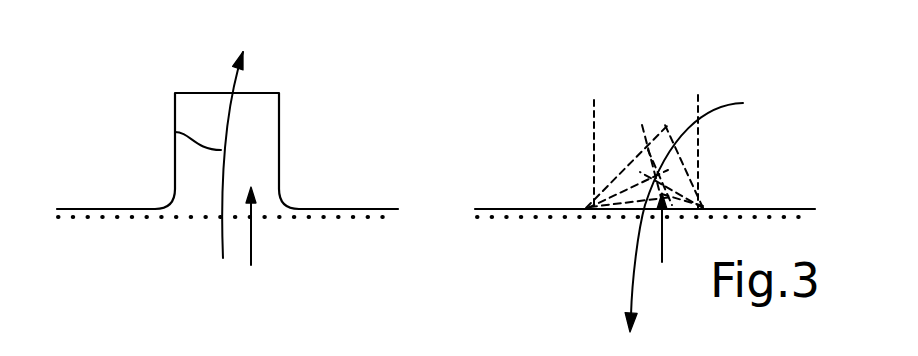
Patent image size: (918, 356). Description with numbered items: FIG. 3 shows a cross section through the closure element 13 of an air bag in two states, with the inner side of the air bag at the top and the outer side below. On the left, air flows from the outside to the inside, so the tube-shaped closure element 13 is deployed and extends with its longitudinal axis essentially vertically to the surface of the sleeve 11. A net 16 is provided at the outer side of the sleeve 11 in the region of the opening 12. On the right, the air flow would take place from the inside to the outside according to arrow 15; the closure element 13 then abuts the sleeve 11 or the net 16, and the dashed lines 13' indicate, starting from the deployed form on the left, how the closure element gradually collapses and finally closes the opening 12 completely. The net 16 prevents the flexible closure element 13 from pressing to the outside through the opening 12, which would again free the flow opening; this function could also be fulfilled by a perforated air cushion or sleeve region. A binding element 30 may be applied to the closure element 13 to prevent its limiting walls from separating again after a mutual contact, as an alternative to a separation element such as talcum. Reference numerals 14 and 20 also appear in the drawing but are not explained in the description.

The sleeve 11 is at (375, 209).
The opening 12 is at (457, 243).
The closure element 13 is at (437, 190).
The dashed lines 13' is at (590, 151).
The sidewall of structure 14 is at (175, 132).
The arrow 15 is at (683, 130).
The net 16 is at (103, 219).
The rotation direction arrow 20 is at (684, 229).
The binding element 30 is at (176, 119).